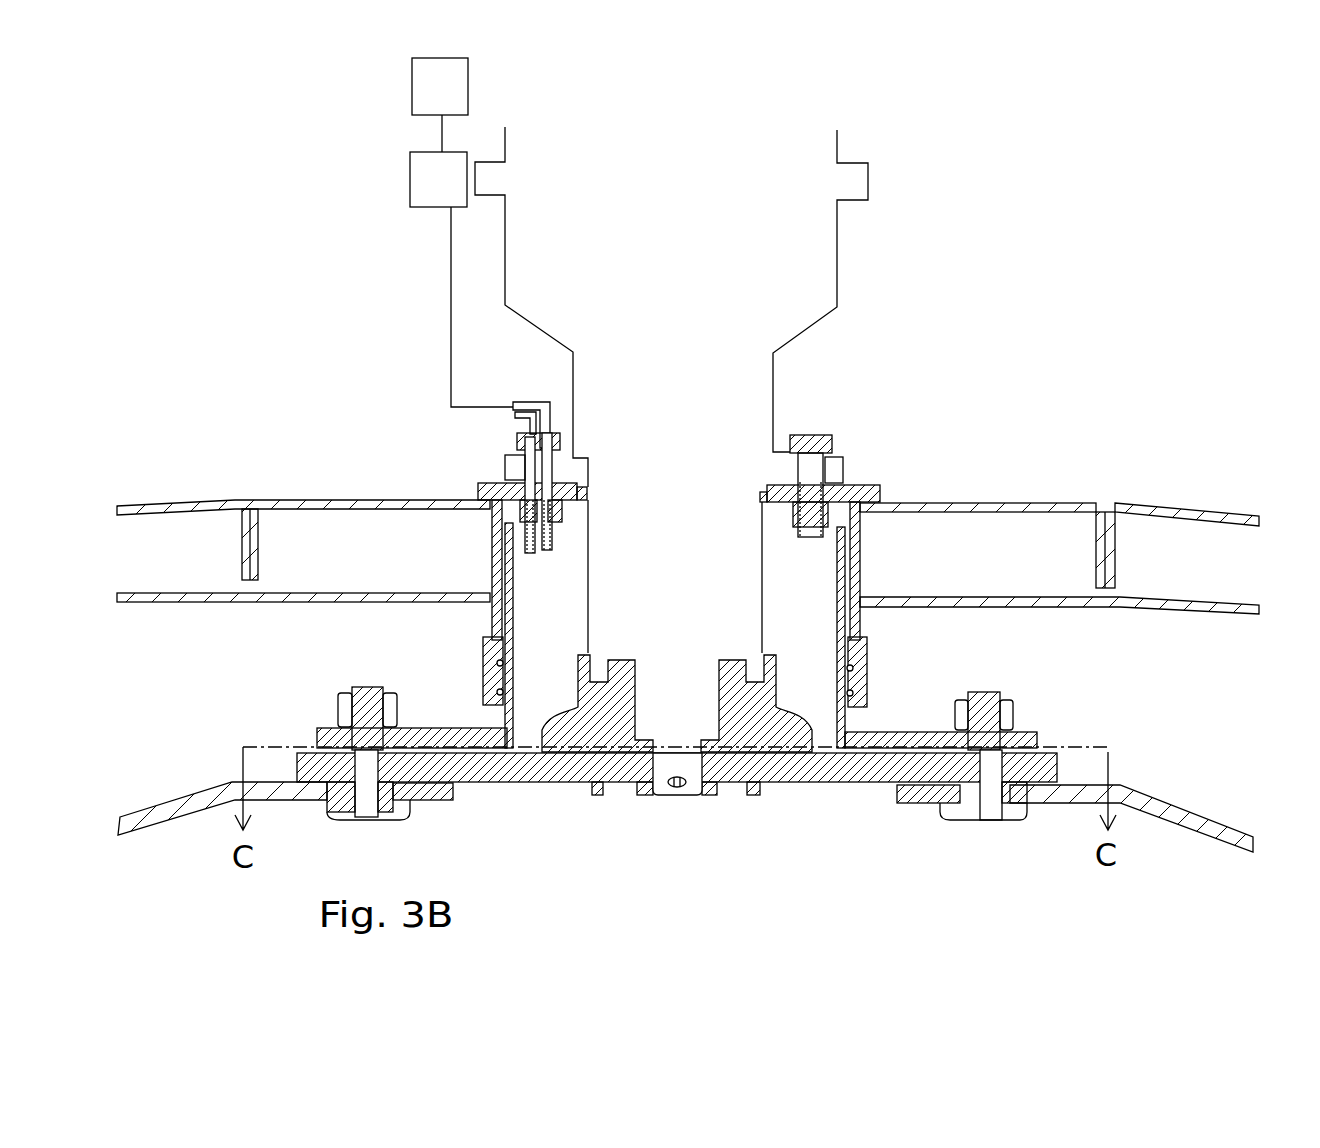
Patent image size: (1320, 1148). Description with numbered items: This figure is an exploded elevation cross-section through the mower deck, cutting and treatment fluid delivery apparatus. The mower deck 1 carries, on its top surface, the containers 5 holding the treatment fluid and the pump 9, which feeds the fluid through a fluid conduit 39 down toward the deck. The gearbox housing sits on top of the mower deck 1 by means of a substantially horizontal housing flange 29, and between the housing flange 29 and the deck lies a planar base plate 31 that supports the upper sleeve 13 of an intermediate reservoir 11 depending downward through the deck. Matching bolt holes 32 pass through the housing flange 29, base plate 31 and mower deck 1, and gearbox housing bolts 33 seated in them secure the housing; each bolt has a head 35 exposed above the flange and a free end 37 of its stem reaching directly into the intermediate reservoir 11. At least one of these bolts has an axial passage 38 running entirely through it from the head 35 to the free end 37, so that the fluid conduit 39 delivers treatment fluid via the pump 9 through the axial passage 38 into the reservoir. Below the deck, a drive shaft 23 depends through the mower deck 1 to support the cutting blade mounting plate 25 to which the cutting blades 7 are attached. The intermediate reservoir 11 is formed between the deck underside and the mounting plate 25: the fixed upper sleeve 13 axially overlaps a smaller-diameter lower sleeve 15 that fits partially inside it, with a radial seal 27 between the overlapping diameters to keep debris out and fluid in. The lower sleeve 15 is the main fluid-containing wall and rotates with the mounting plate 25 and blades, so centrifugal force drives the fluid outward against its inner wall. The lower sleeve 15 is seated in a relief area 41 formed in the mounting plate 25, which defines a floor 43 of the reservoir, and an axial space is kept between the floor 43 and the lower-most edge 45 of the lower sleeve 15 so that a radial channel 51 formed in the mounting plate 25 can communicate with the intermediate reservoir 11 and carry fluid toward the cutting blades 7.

The mower deck 1 is at (177, 500).
The containers 5 is at (430, 103).
The cutting blades 7 is at (1177, 810).
The pump 9 is at (428, 197).
The intermediate reservoir 11 is at (532, 633).
The upper sleeve 13 is at (495, 617).
The lower sleeve 15 is at (507, 720).
The drive shaft 23 is at (677, 795).
The cutting blade mounting plate 25 is at (865, 785).
The radial seal 27 is at (852, 692).
The housing flange 29 is at (847, 460).
The base plate 31 is at (866, 484).
The bolt holes 32 is at (822, 503).
The gearbox housing bolts 33 is at (527, 467).
The head 35 is at (513, 438).
The free end 37 is at (492, 563).
The axial passage 38 is at (537, 557).
The fluid conduit 39 is at (450, 310).
The relief area 41 is at (822, 727).
The floor 43 is at (830, 750).
The lower-most edge 45 is at (507, 753).
The radial channel 51 is at (463, 750).